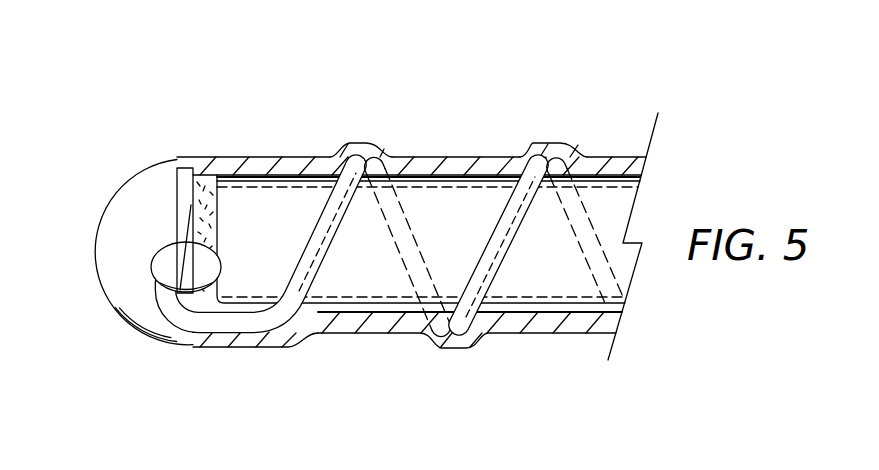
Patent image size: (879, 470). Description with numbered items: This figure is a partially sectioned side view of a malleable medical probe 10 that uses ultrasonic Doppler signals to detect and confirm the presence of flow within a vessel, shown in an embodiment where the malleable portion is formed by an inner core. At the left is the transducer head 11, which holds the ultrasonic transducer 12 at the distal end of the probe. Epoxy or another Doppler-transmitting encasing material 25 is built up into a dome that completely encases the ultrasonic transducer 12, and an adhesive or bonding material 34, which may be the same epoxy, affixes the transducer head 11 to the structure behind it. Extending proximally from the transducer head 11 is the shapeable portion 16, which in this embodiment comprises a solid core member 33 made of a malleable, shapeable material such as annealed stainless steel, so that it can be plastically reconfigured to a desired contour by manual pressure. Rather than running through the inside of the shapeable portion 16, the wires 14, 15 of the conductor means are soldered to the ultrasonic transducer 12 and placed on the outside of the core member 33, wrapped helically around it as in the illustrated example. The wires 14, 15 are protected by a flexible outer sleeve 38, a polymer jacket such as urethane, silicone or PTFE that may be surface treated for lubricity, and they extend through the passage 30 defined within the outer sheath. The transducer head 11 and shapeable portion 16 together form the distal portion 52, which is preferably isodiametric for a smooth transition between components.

The malleable medical probe 10 is at (348, 210).
The transducer head 11 is at (122, 193).
The ultrasonic transducer 12 is at (177, 170).
The wire 14 is at (225, 318).
The wire 15 is at (250, 312).
The shapeable portion 16 is at (474, 123).
The encasing material 25 is at (108, 198).
The passage 30 is at (288, 343).
The core member 33 is at (417, 193).
The adhesive or bonding material 34 is at (210, 180).
The outer sleeve 38 is at (360, 147).
The distal portion 52 is at (490, 77).